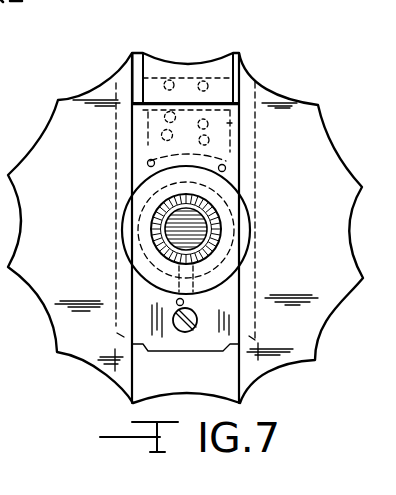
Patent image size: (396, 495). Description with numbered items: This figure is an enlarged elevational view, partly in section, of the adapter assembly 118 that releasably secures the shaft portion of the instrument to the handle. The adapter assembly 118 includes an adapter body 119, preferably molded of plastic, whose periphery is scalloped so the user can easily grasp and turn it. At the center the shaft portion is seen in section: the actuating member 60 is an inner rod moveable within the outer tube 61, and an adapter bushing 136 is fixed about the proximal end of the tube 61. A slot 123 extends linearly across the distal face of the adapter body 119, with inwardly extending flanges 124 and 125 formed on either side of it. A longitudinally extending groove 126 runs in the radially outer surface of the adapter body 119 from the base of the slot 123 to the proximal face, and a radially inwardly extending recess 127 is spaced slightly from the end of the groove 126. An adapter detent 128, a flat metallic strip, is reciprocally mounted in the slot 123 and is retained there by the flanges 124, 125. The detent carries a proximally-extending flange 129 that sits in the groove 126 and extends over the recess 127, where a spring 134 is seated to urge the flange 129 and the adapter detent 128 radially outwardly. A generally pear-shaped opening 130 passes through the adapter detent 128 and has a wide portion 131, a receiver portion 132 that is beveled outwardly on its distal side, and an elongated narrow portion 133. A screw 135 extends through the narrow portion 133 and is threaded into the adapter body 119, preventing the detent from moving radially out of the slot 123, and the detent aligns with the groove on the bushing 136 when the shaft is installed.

The adapter assembly 118 is at (299, 43).
The adapter body 119 is at (346, 158).
The slot 123 is at (221, 388).
The inwardly extending flange 124 is at (123, 372).
The inwardly extending flange 125 is at (250, 365).
The longitudinally extending groove 126 is at (144, 69).
The radially inwardly extending recess 127 is at (145, 136).
The adapter detent 128 is at (229, 128).
The proximally-extending flange 129 is at (229, 50).
The pear-shaped opening 130 is at (148, 163).
The wide portion 131 is at (240, 163).
The receiver portion 132 is at (159, 249).
The elongated narrow portion 133 is at (177, 298).
The spring 134 is at (184, 82).
The screw 135 is at (198, 317).
The adapter bushing 136 is at (227, 239).
The actuating member 60 is at (203, 208).
The outer tube 61 is at (163, 223).